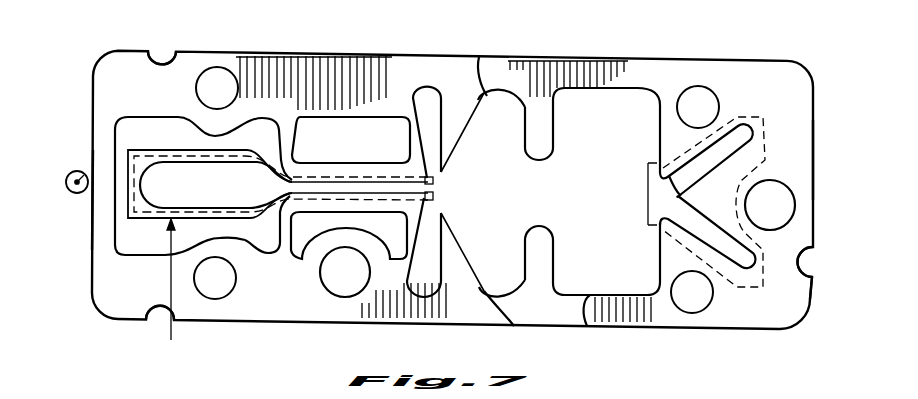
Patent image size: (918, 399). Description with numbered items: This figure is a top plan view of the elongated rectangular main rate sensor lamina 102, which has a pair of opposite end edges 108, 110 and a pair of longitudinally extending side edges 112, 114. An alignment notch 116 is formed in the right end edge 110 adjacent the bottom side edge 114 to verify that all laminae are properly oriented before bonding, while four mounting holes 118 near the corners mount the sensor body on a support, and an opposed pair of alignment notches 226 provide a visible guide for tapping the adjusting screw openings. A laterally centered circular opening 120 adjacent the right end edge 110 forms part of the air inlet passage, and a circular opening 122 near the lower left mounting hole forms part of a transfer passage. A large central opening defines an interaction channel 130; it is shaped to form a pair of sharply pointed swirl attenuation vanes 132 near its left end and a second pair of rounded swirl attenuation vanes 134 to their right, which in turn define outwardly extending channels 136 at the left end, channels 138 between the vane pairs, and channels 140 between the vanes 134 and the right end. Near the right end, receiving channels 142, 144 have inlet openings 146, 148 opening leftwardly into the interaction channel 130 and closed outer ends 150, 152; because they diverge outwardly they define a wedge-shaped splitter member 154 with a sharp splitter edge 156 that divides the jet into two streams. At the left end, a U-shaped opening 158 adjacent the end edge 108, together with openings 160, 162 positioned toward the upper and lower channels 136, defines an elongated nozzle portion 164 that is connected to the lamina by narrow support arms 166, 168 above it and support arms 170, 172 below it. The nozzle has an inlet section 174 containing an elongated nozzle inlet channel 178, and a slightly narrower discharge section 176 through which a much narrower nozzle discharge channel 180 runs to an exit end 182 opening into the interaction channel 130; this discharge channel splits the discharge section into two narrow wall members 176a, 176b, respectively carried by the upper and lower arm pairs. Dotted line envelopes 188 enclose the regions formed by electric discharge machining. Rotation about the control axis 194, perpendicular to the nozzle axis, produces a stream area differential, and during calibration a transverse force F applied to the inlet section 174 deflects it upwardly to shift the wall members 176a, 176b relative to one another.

The main rate sensor lamina 102 is at (747, 57).
The left end edge 108 is at (92, 215).
The right end edge 110 is at (815, 163).
The top side edge 112 is at (530, 58).
The bottom side edge 114 is at (528, 327).
The alignment notch 116 is at (800, 262).
The mounting holes 118 is at (197, 88).
The circular opening 120 is at (794, 210).
The circular opening 122 is at (327, 290).
The interaction channel 130 is at (556, 195).
The swirl attenuation vanes 132 is at (462, 135).
The swirl attenuation vanes 134 is at (547, 143).
The laterally outwardly extending channels 136 is at (442, 103).
The laterally outwardly extending channels 138 is at (480, 56).
The laterally outwardly extending channels 140 is at (633, 95).
The receiving channel 142 is at (740, 150).
The receiving channel 144 is at (740, 268).
The inlet opening 146 is at (667, 185).
The inlet opening 148 is at (667, 210).
The closed outer end 150 is at (767, 140).
The closed outer end 152 is at (797, 277).
The splitter member 154 is at (725, 203).
The splitter edge 156 is at (677, 195).
The opening 158 is at (133, 117).
The opening 160 is at (393, 118).
The opening 162 is at (305, 240).
The nozzle portion 164 is at (225, 227).
The support arm 166 is at (287, 145).
The support arm 168 is at (440, 148).
The support arm 170 is at (282, 235).
The support arm 172 is at (453, 252).
The nozzle inlet section 174 is at (122, 149).
The nozzle discharge section 176 is at (351, 140).
The nozzle wall member 176a is at (313, 167).
The nozzle wall member 176b is at (353, 211).
The nozzle inlet channel 178 is at (233, 191).
The nozzle discharge channel 180 is at (340, 187).
The exit end 182 is at (436, 181).
The dotted line envelopes 188 is at (405, 160).
The control axis 194 is at (87, 171).
The alignment notches 226 is at (167, 58).
The transverse force F is at (172, 331).